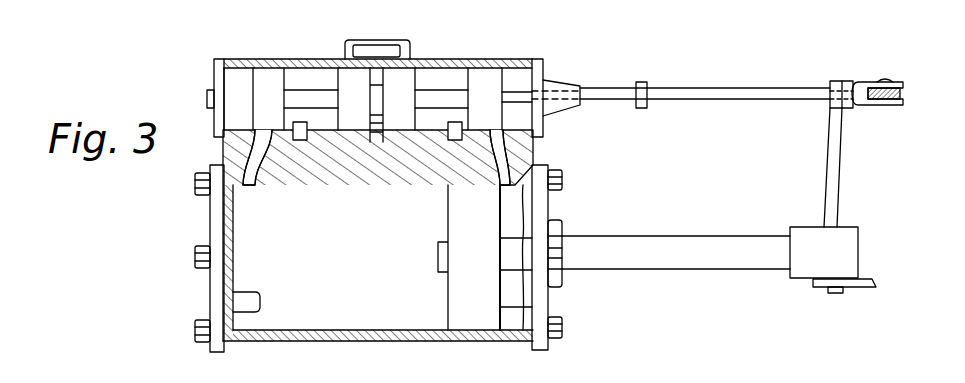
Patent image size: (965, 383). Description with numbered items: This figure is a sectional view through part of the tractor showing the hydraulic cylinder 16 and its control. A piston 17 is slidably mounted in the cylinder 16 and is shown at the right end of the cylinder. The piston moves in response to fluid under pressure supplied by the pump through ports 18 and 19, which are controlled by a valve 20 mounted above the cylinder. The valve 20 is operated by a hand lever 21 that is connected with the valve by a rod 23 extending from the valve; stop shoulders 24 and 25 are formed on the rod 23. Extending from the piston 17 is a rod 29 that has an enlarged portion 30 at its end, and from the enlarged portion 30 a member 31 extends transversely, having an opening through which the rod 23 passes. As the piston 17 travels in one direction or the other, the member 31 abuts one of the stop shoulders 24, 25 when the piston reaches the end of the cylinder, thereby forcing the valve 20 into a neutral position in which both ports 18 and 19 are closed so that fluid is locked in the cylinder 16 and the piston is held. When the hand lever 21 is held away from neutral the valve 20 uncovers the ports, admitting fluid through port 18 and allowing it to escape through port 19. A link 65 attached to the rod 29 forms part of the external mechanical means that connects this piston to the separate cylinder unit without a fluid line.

The cylinder 16 is at (417, 342).
The piston 17 is at (490, 323).
The port 18 is at (505, 212).
The port 19 is at (250, 181).
The valve 20 is at (483, 72).
The hand lever 21 is at (902, 92).
The rod 23 is at (773, 99).
The stop shoulder 24 is at (642, 108).
The stop shoulder 25 is at (848, 110).
The rod 29 is at (697, 262).
The enlarged portion 30 is at (848, 234).
The member 31 is at (830, 142).
The link 65 is at (867, 280).